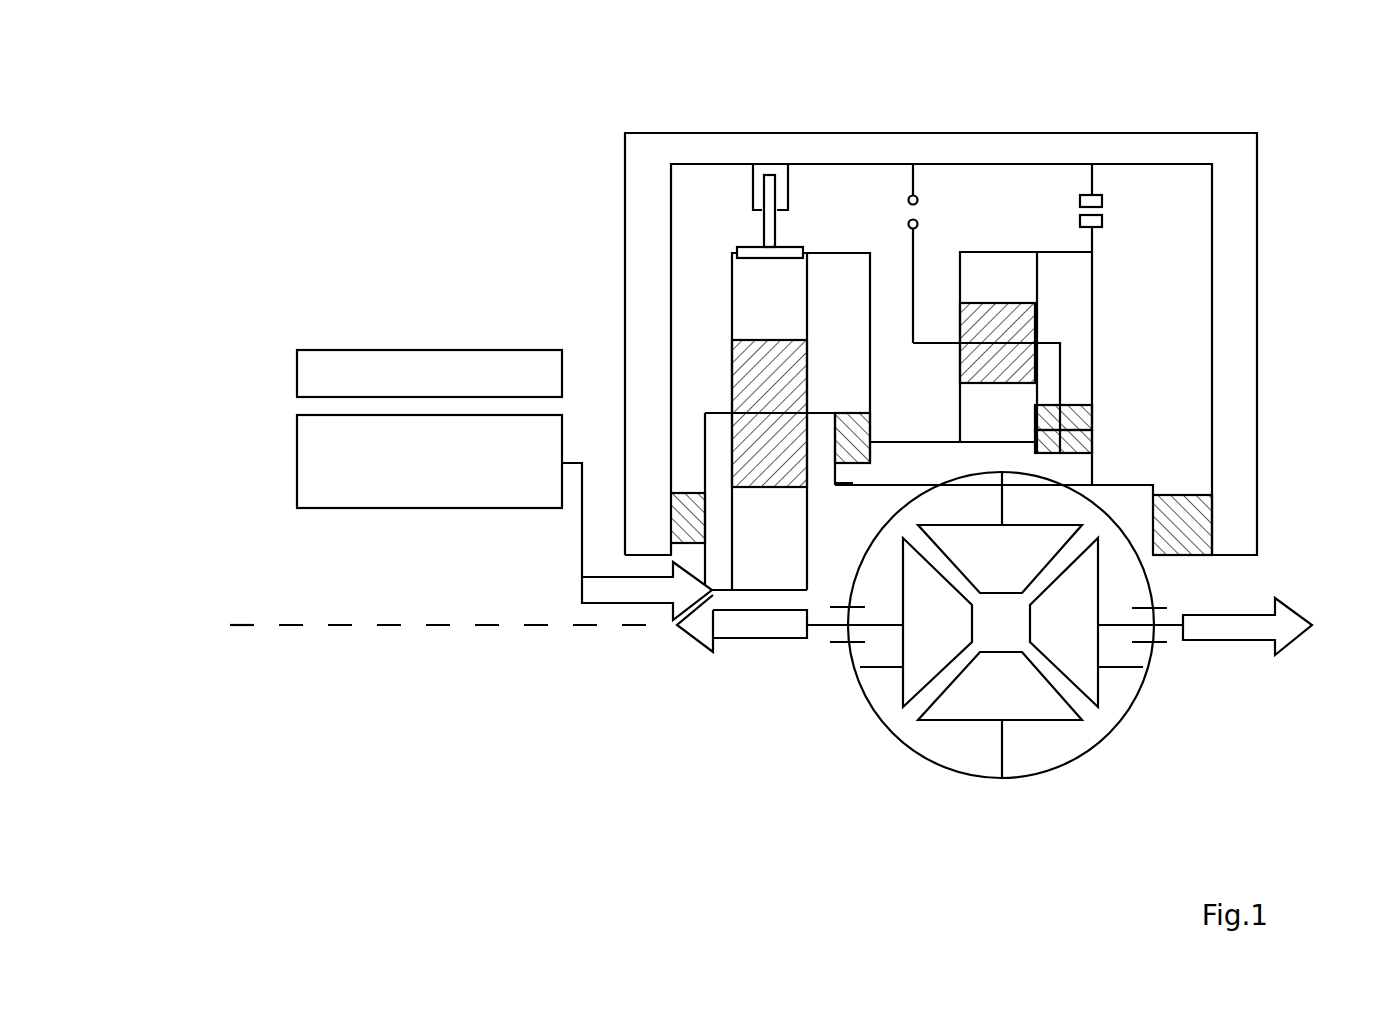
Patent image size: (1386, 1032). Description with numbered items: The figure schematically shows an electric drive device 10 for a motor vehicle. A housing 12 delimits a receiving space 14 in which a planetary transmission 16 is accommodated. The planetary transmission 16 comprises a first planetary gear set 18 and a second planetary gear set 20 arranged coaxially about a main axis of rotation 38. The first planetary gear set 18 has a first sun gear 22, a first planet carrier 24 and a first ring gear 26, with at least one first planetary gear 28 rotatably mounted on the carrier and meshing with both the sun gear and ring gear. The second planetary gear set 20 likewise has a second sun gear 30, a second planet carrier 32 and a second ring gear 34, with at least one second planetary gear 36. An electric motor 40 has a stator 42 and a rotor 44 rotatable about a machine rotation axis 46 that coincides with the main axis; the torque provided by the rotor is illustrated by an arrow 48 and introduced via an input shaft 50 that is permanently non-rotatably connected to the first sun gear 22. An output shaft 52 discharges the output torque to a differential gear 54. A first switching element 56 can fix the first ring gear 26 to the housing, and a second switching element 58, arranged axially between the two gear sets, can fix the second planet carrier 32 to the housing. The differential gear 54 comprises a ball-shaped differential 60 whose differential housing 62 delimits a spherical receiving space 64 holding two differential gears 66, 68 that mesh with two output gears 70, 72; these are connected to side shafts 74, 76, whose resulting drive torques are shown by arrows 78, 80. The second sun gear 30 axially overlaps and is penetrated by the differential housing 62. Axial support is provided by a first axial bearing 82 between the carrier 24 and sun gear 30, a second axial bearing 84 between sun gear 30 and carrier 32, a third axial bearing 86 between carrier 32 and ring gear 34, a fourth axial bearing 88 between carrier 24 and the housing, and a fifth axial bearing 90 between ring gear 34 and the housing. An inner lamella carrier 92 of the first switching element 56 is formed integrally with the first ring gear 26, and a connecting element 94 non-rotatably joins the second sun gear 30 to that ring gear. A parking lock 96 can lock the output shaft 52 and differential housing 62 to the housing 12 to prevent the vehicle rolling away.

The electric drive device 10 is at (1247, 116).
The housing 12 is at (1237, 208).
The receiving space 14 is at (1152, 198).
The planetary transmission 16 is at (1102, 312).
The first planetary gear set 18 is at (808, 227).
The second planetary gear set 20 is at (1010, 215).
The first sun gear 22 is at (765, 572).
The first planet carrier 24 is at (722, 413).
The first ring gear 26 is at (742, 308).
The first planetary gear 28 is at (787, 380).
The second sun gear 30 is at (1022, 402).
The second planet carrier 32 is at (943, 345).
The second ring gear 34 is at (997, 268).
The second planetary gear 36 is at (1018, 327).
The main axis of rotation 38 is at (485, 630).
The electric motor 40 is at (297, 347).
The stator 42 is at (357, 362).
The rotor 44 is at (363, 498).
The machine rotation axis 46 is at (290, 630).
The arrow 48 is at (618, 607).
The input shaft 50 is at (703, 637).
The output shaft 52 is at (875, 477).
The differential gear 54 is at (1160, 713).
The first switching element 56 is at (722, 195).
The second switching element 58 is at (927, 190).
The ball-shaped differential 60 is at (1075, 753).
The differential housing 62 is at (1018, 780).
The receiving space 64 is at (967, 763).
The differential gear 66 is at (1053, 530).
The differential gear 68 is at (1063, 713).
The output gear 70 is at (942, 603).
The output gear 72 is at (1087, 603).
The shaft 74 is at (1168, 627).
The shaft 76 is at (818, 628).
The arrow 78 is at (737, 642).
The arrow 80 is at (1253, 613).
The first axial bearing 82 is at (853, 465).
The second axial bearing 84 is at (1052, 440).
The third axial bearing 86 is at (1090, 413).
The fourth axial bearing 88 is at (672, 523).
The fifth axial bearing 90 is at (1188, 520).
The inner lamella carrier 92 is at (792, 252).
The connecting element 94 is at (882, 277).
The parking lock 96 is at (1105, 177).